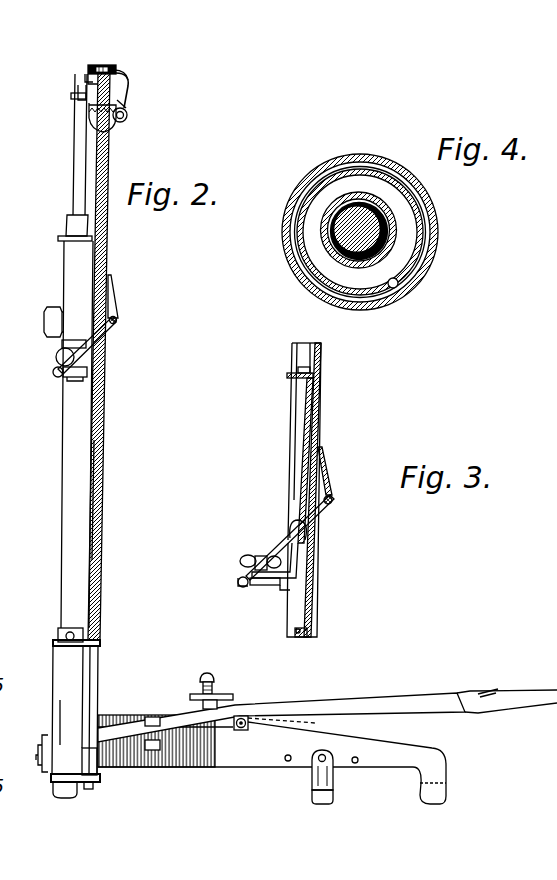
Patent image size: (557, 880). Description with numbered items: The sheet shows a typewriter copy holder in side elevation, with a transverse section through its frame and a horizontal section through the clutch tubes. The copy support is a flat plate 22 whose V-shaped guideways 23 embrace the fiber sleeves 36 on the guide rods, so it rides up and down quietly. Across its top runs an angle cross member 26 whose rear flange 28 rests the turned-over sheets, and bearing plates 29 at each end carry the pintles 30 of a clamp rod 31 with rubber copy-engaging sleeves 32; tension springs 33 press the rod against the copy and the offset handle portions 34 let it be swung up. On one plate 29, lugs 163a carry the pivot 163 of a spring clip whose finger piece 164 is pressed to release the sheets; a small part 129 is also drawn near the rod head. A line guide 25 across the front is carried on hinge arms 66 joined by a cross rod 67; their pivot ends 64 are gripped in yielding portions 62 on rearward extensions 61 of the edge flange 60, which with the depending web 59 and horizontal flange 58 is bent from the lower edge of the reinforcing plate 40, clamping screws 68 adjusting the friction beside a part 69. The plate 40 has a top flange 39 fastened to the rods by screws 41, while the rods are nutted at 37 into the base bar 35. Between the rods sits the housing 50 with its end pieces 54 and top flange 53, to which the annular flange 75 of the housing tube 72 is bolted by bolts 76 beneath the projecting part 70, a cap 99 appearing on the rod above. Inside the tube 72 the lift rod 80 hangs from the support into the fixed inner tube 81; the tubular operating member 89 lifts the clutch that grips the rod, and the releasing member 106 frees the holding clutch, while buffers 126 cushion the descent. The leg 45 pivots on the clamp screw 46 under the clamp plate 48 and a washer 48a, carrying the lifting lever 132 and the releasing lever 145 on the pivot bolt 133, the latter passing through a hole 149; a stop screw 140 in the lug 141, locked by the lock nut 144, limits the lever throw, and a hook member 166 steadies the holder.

In FIG. 2, the copy support plate 22 is at (100, 432).
In FIG. 3, the copy support plate 22 is at (322, 382).
In FIG. 2, the guideways 23 is at (97, 502).
In FIG. 2, the line guide 25 is at (114, 300).
In FIG. 3, the line guide 25 is at (328, 478).
In FIG. 2, the cross member 26 is at (117, 130).
In FIG. 2, the rearwardly extending flange 28 is at (82, 102).
In FIG. 2, the bearing plate 29 is at (130, 78).
In FIG. 2, the pintles 30 is at (128, 80).
In FIG. 2, the clamp rod 31 is at (127, 112).
In FIG. 2, the copy-engaging sleeves 32 is at (127, 119).
In FIG. 2, the tension springs 33 is at (95, 120).
In FIG. 2, the handle portions 34 is at (122, 102).
In FIG. 2, the base bar 35 is at (52, 778).
In FIG. 2, the tubular sleeves 36 is at (100, 654).
In FIG. 3, the tubular sleeves 36 is at (300, 607).
In FIG. 2, the nuts 37 is at (103, 795).
In FIG. 3, the top flange 39 is at (290, 378).
In FIG. 3, the reinforcing plate 40 is at (308, 423).
In FIG. 3, the screws 41 is at (302, 367).
In FIG. 2, the leg 45 is at (272, 759).
In FIG. 2, the clamp screw 46 is at (26, 736).
In FIG. 2, the clamp plate 48 is at (21, 745).
In FIG. 2, the collar lip 48a is at (26, 761).
In FIG. 2, the housing 50 is at (58, 665).
In FIG. 2, the top flange of housing 53 is at (53, 642).
In FIG. 2, the end pieces 54 is at (77, 724).
In FIG. 3, the horizontal flange 58 is at (300, 530).
In FIG. 3, the depending web 59 is at (296, 558).
In FIG. 3, the edge flange 60 is at (283, 590).
In FIG. 2, the rearward extensions 61 is at (62, 345).
In FIG. 3, the rearward extensions 61 is at (243, 586).
In FIG. 2, the yielding portions 62 is at (65, 380).
In FIG. 3, the yielding portions 62 is at (262, 585).
In FIG. 2, the pivot ends 64 is at (56, 371).
In FIG. 3, the pivot ends 64 is at (240, 582).
In FIG. 2, the hinge arms 66 is at (102, 338).
In FIG. 3, the hinge arms 66 is at (284, 541).
In FIG. 2, the cross rod 67 is at (118, 318).
In FIG. 3, the cross rod 67 is at (334, 500).
In FIG. 3, the clamping screws 68 is at (250, 556).
In FIG. 3, the lobe 69 is at (243, 563).
In FIG. 2, the rearwardly projecting part 70 is at (63, 234).
In FIG. 2, the housing tube 72 is at (60, 537).
In FIG. 4, the housing tube 72 is at (283, 240).
In FIG. 2, the annular flange 75 is at (58, 628).
In FIG. 2, the bolts 76 is at (72, 635).
In FIG. 2, the lift rod 80 is at (77, 196).
In FIG. 4, the lift rod 80 is at (383, 226).
In FIG. 4, the inner tube 81 is at (389, 234).
In FIG. 4, the operating member 89 is at (391, 248).
In FIG. 2, the cap 99 is at (67, 222).
In FIG. 4, the releasing member 106 is at (396, 285).
In FIG. 2, the buffers 126 is at (82, 752).
In FIG. 2, the clip 129 is at (72, 94).
In FIG. 2, the lifting lever 132 is at (407, 704).
In FIG. 2, the pivot bolt 133 is at (246, 716).
In FIG. 2, the stop screw 140 is at (216, 678).
In FIG. 2, the lug 141 is at (190, 700).
In FIG. 2, the lock nut 144 is at (222, 699).
In FIG. 2, the releasing lever 145 is at (488, 692).
In FIG. 2, the hole 149 is at (152, 747).
In FIG. 2, the pivot 163 is at (88, 77).
In FIG. 2, the lugs 163a is at (83, 80).
In FIG. 2, the finger piece 164 is at (103, 68).
In FIG. 2, the hook member 166 is at (334, 787).